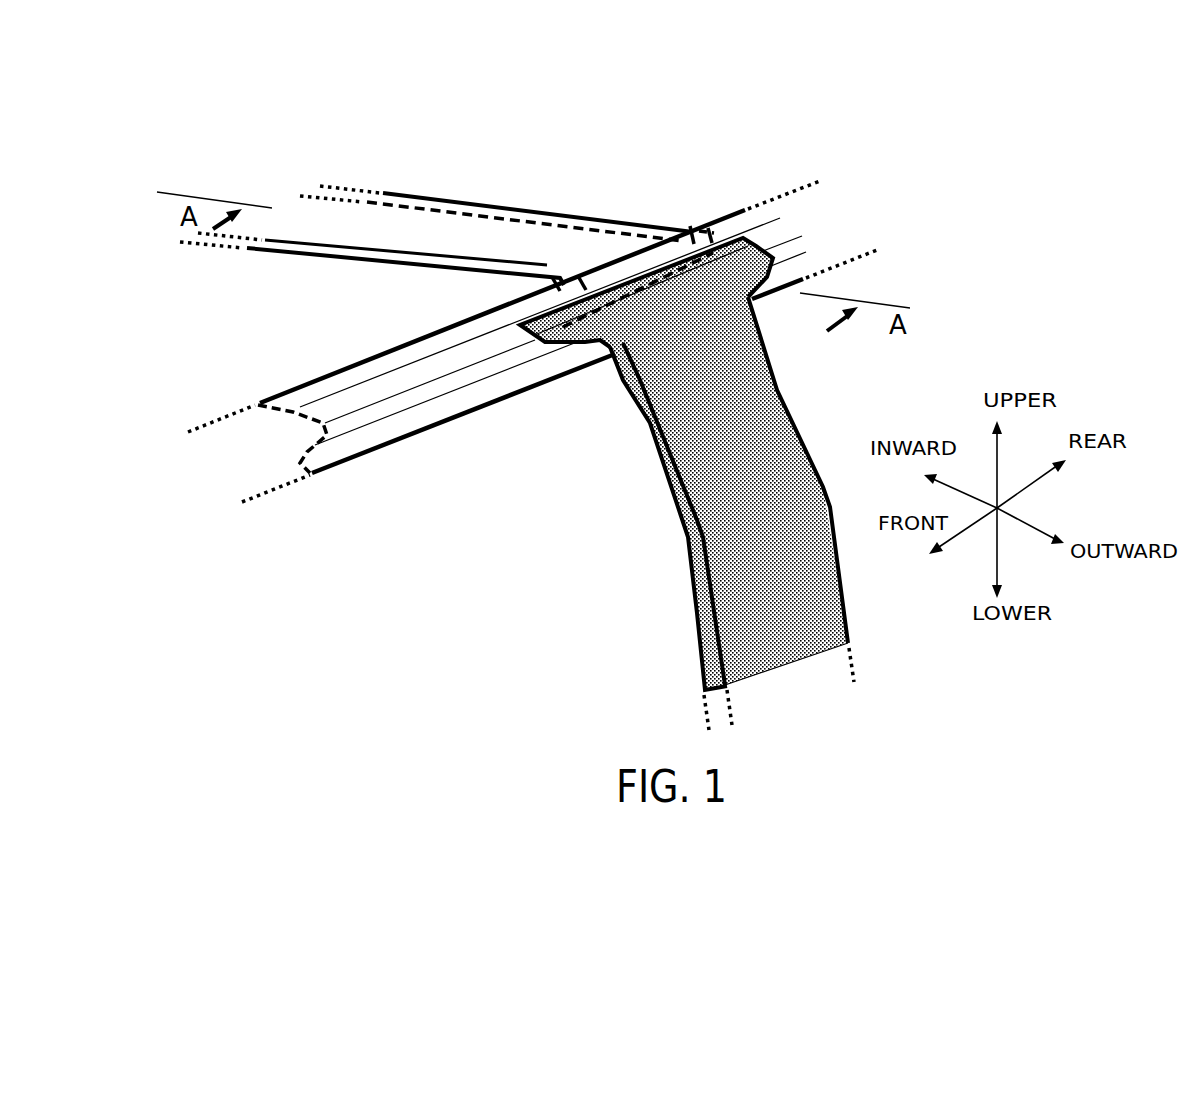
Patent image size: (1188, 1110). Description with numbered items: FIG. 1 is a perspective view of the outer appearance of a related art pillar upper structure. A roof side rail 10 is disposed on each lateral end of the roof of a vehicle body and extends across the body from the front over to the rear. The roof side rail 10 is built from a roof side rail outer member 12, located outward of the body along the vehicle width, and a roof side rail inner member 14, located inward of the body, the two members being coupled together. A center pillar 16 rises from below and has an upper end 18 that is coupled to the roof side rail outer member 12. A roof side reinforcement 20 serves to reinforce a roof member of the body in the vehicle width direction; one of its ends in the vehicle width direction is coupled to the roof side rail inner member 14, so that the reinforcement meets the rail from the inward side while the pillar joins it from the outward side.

The roof side rail 10 is at (342, 351).
The roof side rail outer member 12 is at (353, 420).
The roof side rail inner member 14 is at (297, 423).
The center pillar 16 is at (723, 543).
The upper end 18 is at (785, 248).
The roof side reinforcement 20 is at (462, 245).